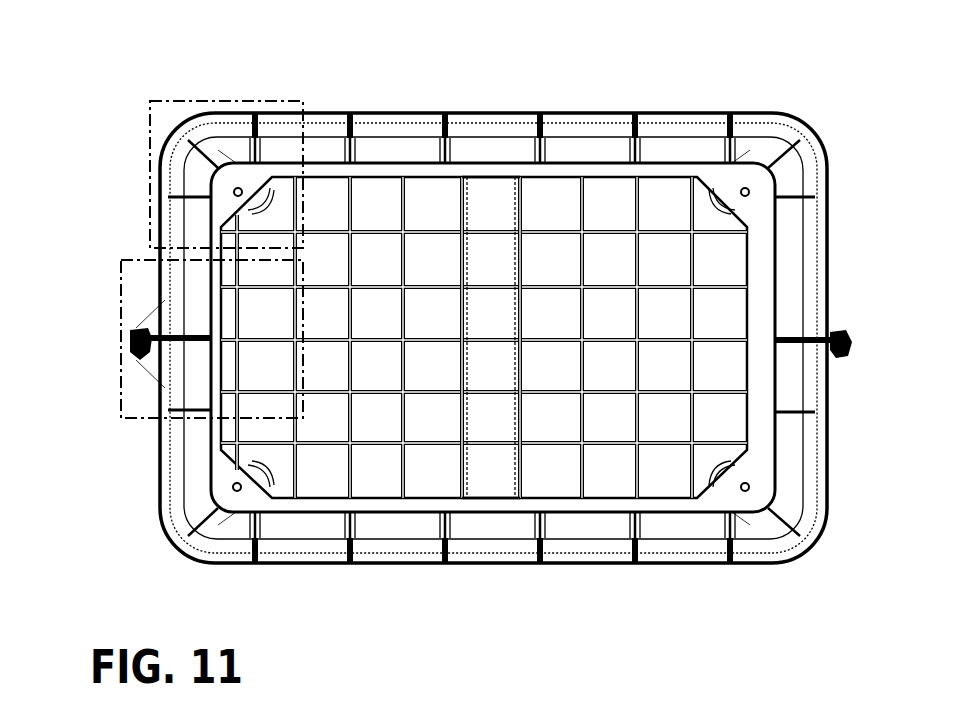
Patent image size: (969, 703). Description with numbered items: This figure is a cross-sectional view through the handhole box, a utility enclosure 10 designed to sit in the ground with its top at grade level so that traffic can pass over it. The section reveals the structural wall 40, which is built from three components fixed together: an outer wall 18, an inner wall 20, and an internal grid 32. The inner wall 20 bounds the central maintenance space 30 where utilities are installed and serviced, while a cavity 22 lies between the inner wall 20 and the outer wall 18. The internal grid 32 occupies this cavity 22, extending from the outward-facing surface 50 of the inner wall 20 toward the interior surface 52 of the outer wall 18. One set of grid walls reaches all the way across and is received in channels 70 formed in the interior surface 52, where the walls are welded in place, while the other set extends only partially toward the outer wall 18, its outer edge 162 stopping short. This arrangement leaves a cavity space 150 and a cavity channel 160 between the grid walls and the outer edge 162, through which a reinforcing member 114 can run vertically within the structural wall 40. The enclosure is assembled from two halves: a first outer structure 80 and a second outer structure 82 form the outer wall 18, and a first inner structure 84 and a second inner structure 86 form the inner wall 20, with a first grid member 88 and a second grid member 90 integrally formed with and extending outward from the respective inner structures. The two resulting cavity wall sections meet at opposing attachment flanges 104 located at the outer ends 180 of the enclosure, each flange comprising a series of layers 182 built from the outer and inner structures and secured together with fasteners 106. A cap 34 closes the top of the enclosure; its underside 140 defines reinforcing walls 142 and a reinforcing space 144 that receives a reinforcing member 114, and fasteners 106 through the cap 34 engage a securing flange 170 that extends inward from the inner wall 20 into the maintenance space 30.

The utility enclosure 10 is at (682, 52).
The outer wall 18 is at (790, 546).
The inner wall 20 is at (663, 507).
The cavity 22 is at (187, 213).
The maintenance space 30 is at (262, 436).
The internal grid 32 is at (192, 286).
The cap 34 is at (735, 229).
The structural wall 40 is at (149, 463).
The outward-facing surface 50 is at (410, 153).
The interior surface 52 is at (424, 555).
The channels 70 is at (333, 128).
The first outer structure 80 is at (613, 113).
The second outer structure 82 is at (195, 560).
The first inner structure 84 is at (484, 170).
The second inner structure 86 is at (589, 509).
The first grid member 88 is at (740, 145).
The second grid member 90 is at (244, 525).
The attachment flanges 104 is at (864, 350).
The fasteners 106 is at (770, 500).
The reinforcing member 114 is at (688, 112).
The underside 140 is at (733, 302).
The reinforcing walls 142 is at (775, 242).
The reinforcing space 144 is at (455, 471).
The cavity space 150 is at (381, 152).
The cavity channel 160 is at (477, 104).
The outer edge 162 is at (573, 130).
The securing flange 170 is at (764, 470).
The outer ends 180 is at (848, 358).
The layers 182 is at (849, 345).